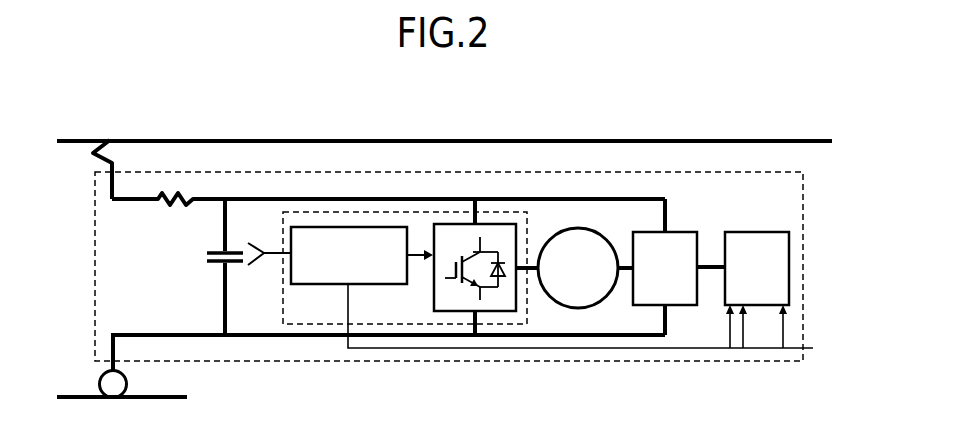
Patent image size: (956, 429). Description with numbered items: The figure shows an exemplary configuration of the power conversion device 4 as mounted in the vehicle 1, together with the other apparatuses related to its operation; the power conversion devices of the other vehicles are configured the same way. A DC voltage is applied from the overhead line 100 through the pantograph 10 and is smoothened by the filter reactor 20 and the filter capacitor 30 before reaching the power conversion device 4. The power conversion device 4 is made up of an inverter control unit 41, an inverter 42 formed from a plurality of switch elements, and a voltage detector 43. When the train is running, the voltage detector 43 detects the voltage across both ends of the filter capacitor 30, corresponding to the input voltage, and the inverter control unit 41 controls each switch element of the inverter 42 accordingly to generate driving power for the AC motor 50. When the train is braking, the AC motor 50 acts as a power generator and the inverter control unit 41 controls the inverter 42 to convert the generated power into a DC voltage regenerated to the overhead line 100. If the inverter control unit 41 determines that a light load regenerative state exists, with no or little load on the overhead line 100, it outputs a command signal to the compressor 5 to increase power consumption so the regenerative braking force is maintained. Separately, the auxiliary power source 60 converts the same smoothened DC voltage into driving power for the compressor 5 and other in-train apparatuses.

The overhead line 100 is at (138, 141).
The pantograph 10 is at (93, 153).
The vehicle 1 is at (795, 172).
The filter reactor 20 is at (191, 190).
The filter capacitor 30 is at (207, 256).
The power conversion device 4 is at (283, 216).
The voltage detector 43 is at (258, 262).
The inverter control unit 41 is at (303, 284).
The inverter 42 is at (434, 297).
The AC motor 50 is at (598, 300).
The auxiliary power source (SIV) 60 is at (685, 232).
The compressor 5 is at (768, 232).